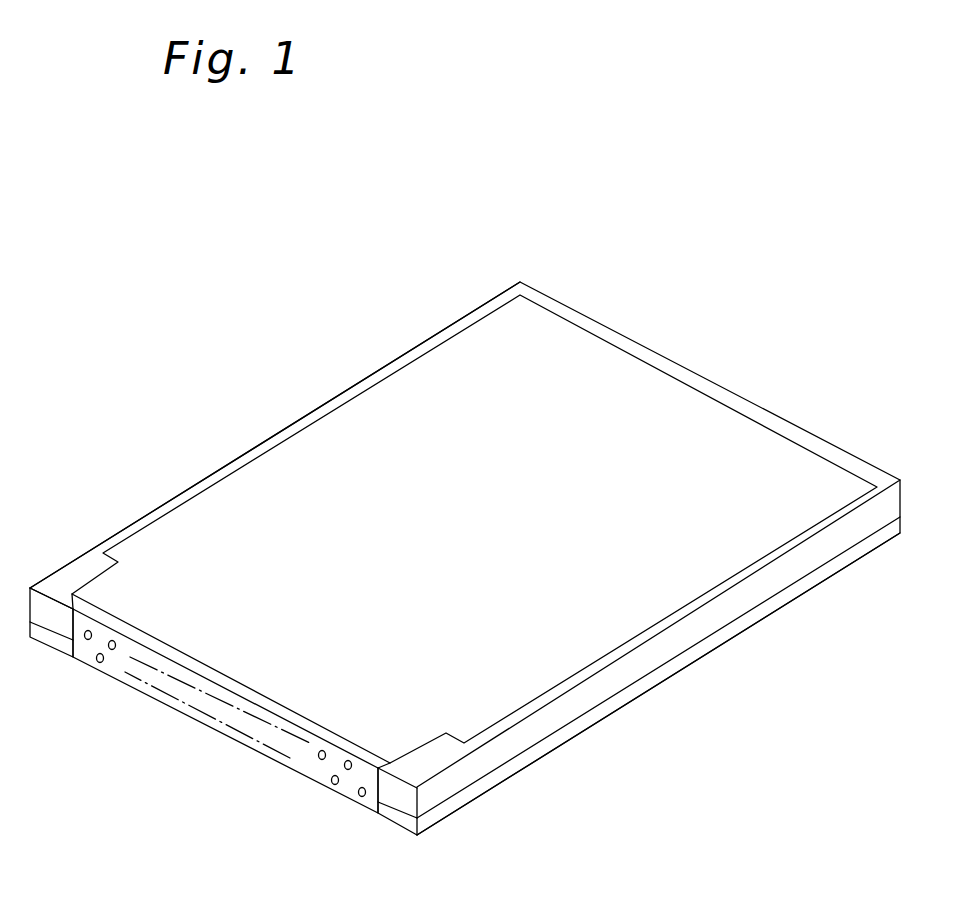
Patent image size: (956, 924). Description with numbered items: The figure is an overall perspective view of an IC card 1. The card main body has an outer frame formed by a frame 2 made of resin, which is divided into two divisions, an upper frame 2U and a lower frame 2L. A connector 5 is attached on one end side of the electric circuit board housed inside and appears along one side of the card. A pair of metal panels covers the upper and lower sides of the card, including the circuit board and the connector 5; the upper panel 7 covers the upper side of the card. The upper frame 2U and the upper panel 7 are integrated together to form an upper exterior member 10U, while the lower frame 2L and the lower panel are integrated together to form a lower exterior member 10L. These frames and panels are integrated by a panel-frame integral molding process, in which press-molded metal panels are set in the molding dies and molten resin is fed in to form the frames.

The IC card 1 is at (675, 361).
The frame 2 is at (783, 697).
The upper frame 2U is at (410, 350).
The lower frame 2L is at (620, 705).
The connector 5 is at (248, 748).
The upper panel 7 is at (315, 453).
The upper exterior member 10U is at (379, 270).
The lower exterior member 10L is at (497, 791).